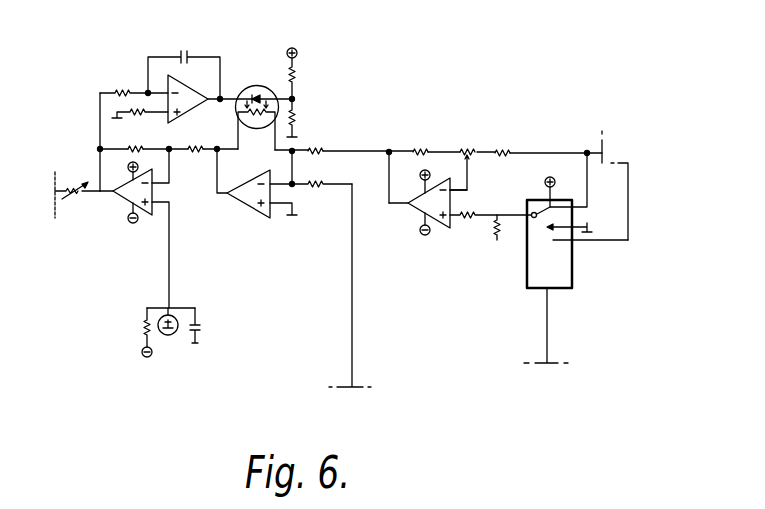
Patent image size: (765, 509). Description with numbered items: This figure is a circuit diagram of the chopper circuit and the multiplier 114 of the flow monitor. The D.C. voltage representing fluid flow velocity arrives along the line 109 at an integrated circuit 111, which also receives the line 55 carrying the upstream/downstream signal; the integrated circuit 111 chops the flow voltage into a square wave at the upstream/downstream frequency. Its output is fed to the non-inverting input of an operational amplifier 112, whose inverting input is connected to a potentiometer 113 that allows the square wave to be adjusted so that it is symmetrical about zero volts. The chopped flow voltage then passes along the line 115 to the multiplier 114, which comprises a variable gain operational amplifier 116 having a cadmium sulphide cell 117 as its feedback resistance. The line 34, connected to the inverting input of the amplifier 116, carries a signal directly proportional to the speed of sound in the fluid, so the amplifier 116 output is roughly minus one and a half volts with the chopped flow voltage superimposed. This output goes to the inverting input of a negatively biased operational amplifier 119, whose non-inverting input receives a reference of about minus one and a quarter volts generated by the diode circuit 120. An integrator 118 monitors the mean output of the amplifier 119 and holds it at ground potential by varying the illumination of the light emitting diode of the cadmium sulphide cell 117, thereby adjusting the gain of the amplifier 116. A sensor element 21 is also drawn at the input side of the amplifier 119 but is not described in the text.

The temperature sensor 21 is at (80, 197).
The line 34 is at (350, 352).
The line 55 is at (547, 332).
The line 109 is at (628, 205).
The integrated circuit 111 is at (572, 275).
The operational amplifier 112 is at (442, 225).
The potentiometer 113 is at (467, 147).
The multiplier 114 is at (158, 44).
The line 115 is at (347, 150).
The variable gain operational amplifier 116 is at (230, 207).
The cadmium sulphide cell 117 is at (253, 84).
The integrator 118 is at (210, 103).
The negatively biased operational amplifier 119 is at (122, 200).
The diode circuit 120 is at (176, 353).